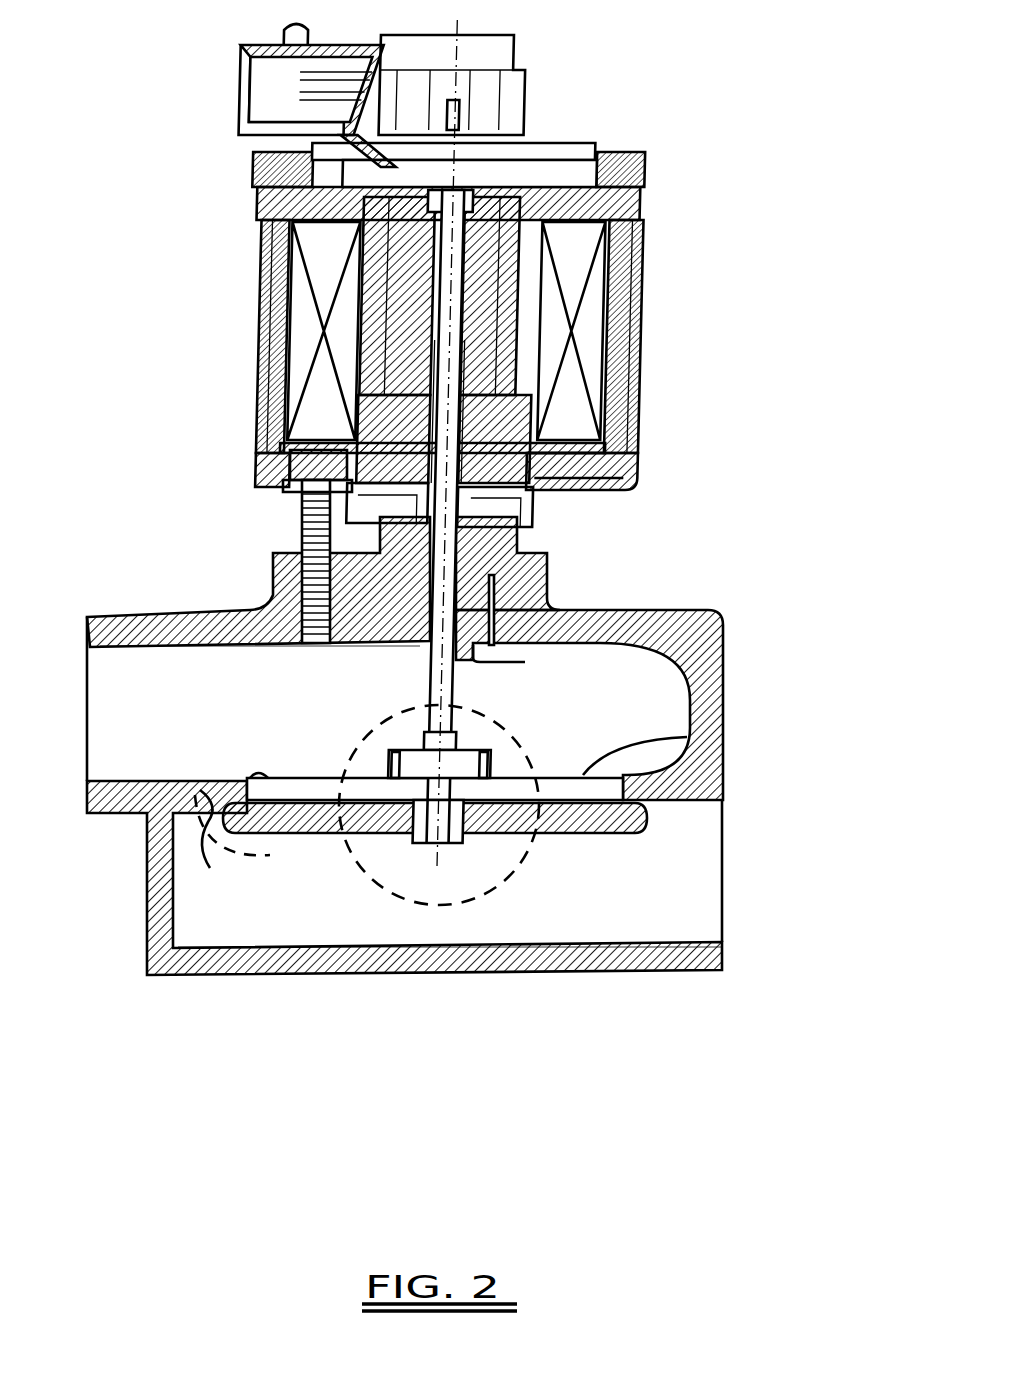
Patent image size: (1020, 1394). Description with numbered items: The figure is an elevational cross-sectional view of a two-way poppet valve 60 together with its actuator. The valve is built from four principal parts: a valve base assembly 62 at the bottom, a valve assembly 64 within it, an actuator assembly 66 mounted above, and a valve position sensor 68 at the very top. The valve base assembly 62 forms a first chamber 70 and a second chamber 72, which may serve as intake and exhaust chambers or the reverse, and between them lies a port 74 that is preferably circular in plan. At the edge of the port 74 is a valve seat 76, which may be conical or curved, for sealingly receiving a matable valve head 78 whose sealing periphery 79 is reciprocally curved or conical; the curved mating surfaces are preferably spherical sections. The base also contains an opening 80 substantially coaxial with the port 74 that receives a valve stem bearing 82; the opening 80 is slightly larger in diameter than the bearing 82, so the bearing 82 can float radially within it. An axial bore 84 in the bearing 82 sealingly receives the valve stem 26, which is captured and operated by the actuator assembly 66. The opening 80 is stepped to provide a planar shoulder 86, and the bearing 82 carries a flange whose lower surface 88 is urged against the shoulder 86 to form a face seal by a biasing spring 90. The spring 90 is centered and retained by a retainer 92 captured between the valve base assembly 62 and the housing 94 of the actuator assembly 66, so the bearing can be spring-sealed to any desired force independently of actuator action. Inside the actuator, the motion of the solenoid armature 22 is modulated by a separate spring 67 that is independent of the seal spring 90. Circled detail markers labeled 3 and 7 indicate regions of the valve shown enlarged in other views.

The two-way poppet valve 60 is at (786, 282).
The valve base assembly 62 is at (723, 673).
The valve assembly 64 is at (420, 668).
The actuator assembly 66 is at (247, 288).
The spring 67 is at (478, 395).
The valve position sensor 68 is at (526, 98).
The first chamber 70 is at (237, 696).
The second chamber 72 is at (562, 931).
The port 74 is at (690, 730).
The valve seat 76 is at (265, 775).
The valve head 78 is at (555, 830).
The sealing periphery 79 is at (232, 850).
The opening 80 is at (480, 657).
The valve stem bearing 82 is at (270, 593).
The axial bore 84 is at (285, 510).
The planar shoulder 86 is at (283, 540).
The lower surface 88 is at (507, 578).
The biasing spring 90 is at (540, 503).
The retainer 92 is at (610, 452).
The housing 94 is at (615, 462).
The solenoid armature 22 is at (484, 300).
The valve stem 26 is at (461, 700).
The detail circle of FIG. 3 is at (372, 890).
The detail indicator of FIG. 7 is at (267, 773).